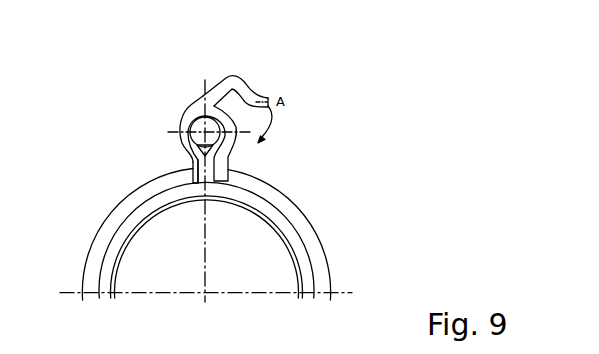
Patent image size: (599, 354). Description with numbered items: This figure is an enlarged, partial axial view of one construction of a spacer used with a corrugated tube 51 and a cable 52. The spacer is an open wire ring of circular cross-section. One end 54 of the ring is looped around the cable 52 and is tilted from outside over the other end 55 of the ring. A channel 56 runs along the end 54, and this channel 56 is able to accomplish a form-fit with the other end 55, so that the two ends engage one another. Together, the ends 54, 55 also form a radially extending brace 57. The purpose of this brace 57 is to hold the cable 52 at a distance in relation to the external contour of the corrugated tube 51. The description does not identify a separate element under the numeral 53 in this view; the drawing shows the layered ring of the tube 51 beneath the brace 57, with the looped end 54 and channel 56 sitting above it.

The corrugated tube 51 is at (110, 223).
The cable 52 is at (186, 122).
The inner liner ring 53 is at (298, 246).
The end of the wire ring 54 is at (227, 78).
The other end of the wire ring 55 is at (238, 144).
The channel 56 is at (258, 92).
The radially extending brace 57 is at (190, 166).